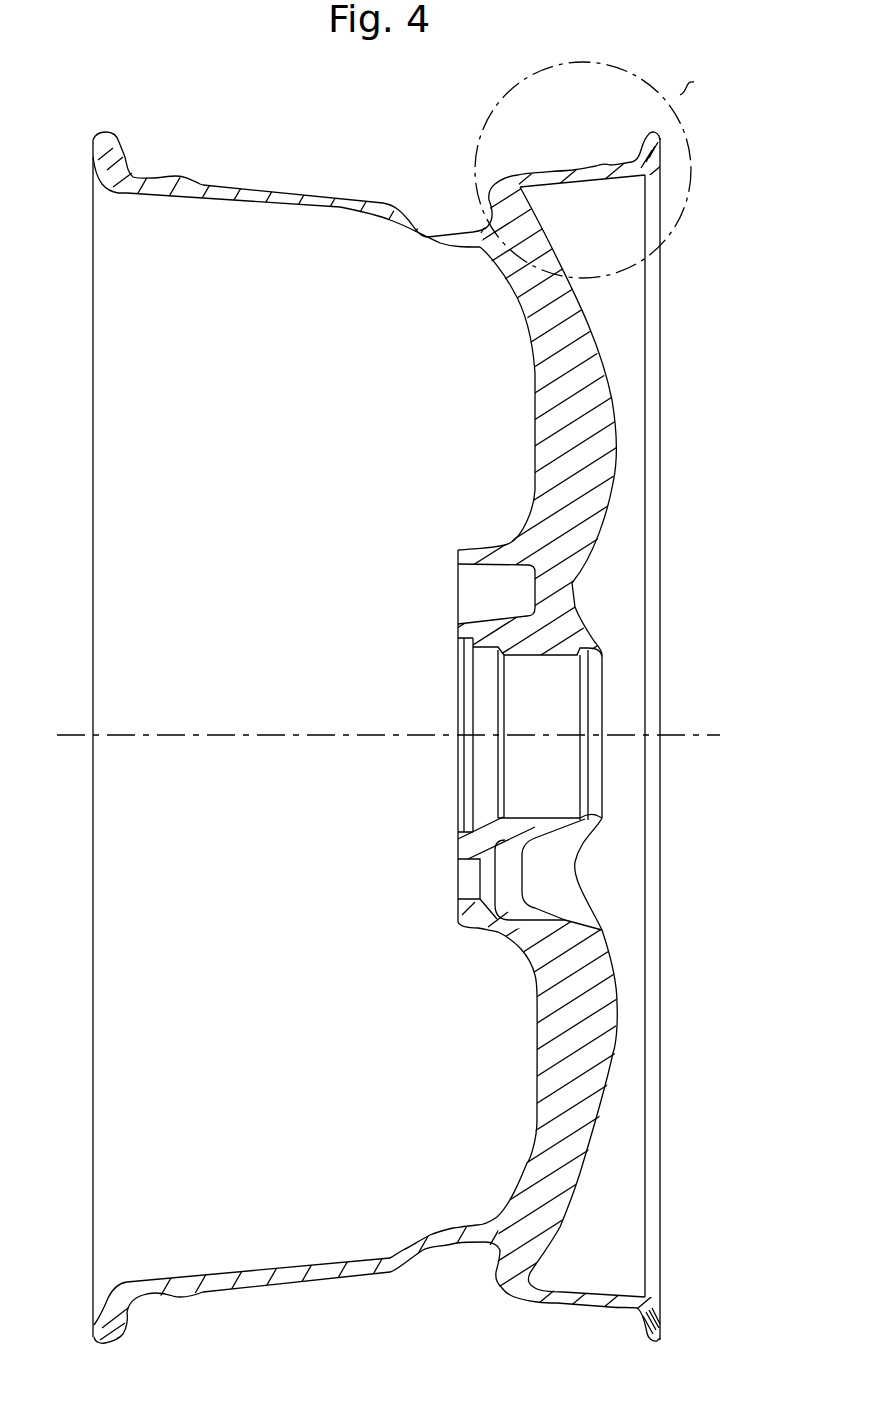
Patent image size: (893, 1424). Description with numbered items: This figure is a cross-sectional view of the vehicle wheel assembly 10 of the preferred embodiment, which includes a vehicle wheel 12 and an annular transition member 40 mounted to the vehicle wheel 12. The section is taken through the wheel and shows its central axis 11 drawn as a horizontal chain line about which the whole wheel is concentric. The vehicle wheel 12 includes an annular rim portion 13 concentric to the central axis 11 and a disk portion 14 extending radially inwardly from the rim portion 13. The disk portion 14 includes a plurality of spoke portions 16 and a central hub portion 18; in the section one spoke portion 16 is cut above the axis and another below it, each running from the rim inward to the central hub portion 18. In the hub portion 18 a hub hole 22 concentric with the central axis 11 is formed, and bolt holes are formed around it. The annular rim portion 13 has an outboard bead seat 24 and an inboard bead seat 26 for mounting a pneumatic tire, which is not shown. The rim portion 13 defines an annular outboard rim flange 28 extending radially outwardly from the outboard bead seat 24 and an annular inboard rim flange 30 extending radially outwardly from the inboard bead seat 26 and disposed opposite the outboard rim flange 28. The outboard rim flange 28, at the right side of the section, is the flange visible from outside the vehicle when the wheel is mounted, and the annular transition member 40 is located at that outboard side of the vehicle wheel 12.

The vehicle wheel assembly 10 is at (449, 719).
The central axis 11 is at (705, 735).
The vehicle wheel 12 is at (583, 1088).
The annular rim portion 13 is at (328, 199).
The disk portion 14 is at (531, 401).
The spoke portion 16 is at (603, 1046).
The central hub portion 18 is at (540, 633).
The hub hole 22 is at (545, 820).
The outboard bead seat 24 is at (617, 163).
The inboard bead seat 26 is at (148, 183).
The outboard rim flange 28 is at (644, 134).
The inboard rim flange 30 is at (108, 142).
The annular transition member 40 is at (664, 1296).